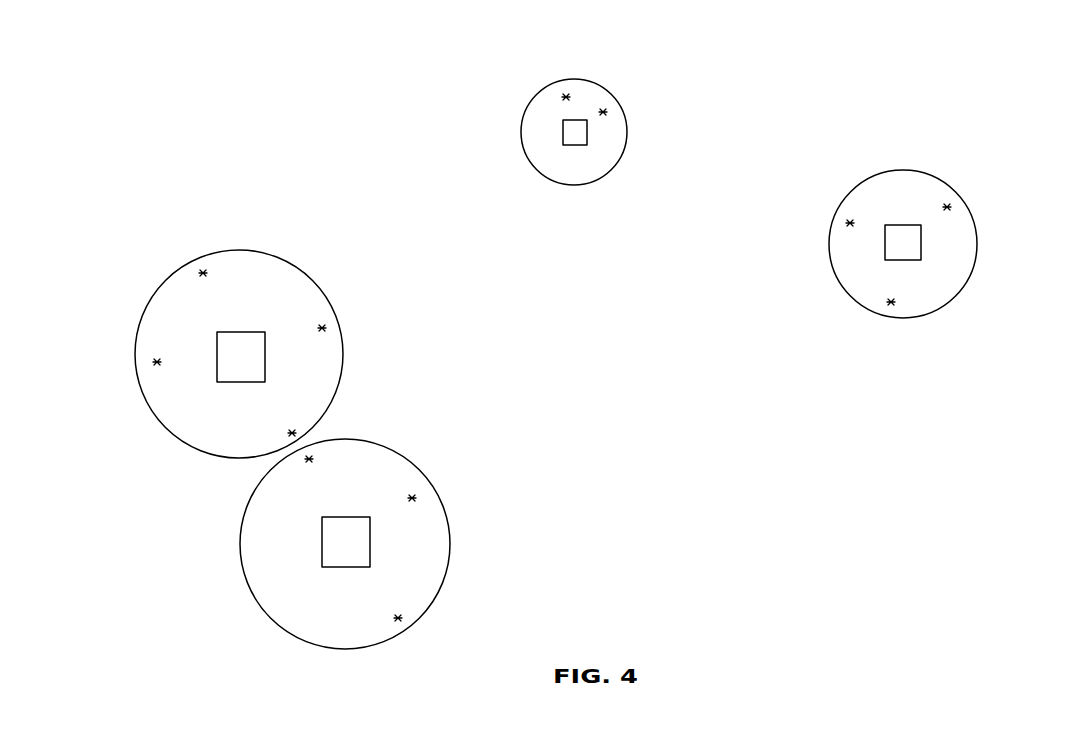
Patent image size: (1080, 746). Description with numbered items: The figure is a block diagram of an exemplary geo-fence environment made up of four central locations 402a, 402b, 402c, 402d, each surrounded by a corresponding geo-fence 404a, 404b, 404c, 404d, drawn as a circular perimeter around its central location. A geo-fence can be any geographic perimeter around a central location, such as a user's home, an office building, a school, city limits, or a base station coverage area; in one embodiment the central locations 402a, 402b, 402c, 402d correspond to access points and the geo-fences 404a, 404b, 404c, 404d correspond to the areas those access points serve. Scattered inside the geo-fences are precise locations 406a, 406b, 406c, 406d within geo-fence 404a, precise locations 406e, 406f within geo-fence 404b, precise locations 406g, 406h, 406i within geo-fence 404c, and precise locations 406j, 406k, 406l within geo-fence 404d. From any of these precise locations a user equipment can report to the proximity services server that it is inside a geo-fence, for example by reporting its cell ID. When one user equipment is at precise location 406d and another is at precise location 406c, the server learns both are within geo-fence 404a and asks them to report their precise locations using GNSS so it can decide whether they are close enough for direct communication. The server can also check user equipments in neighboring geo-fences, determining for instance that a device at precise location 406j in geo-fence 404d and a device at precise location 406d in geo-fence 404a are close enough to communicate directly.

The central location 402a is at (242, 332).
The central location 402b is at (588, 136).
The central location 402c is at (921, 248).
The central location 402d is at (345, 517).
The geo-fence 404a is at (240, 252).
The geo-fence 404b is at (578, 79).
The geo-fence 404c is at (908, 170).
The geo-fence 404d is at (275, 622).
The precise location 406a is at (203, 273).
The precise location 406b is at (157, 362).
The precise location 406c is at (323, 328).
The precise location 406d is at (292, 433).
The precise location 406e is at (566, 97).
The precise location 406f is at (603, 112).
The precise location 406g is at (947, 207).
The precise location 406h is at (850, 223).
The precise location 406i is at (891, 302).
The precise location 406j is at (309, 459).
The precise location 406k is at (412, 498).
The precise location 406l is at (398, 618).